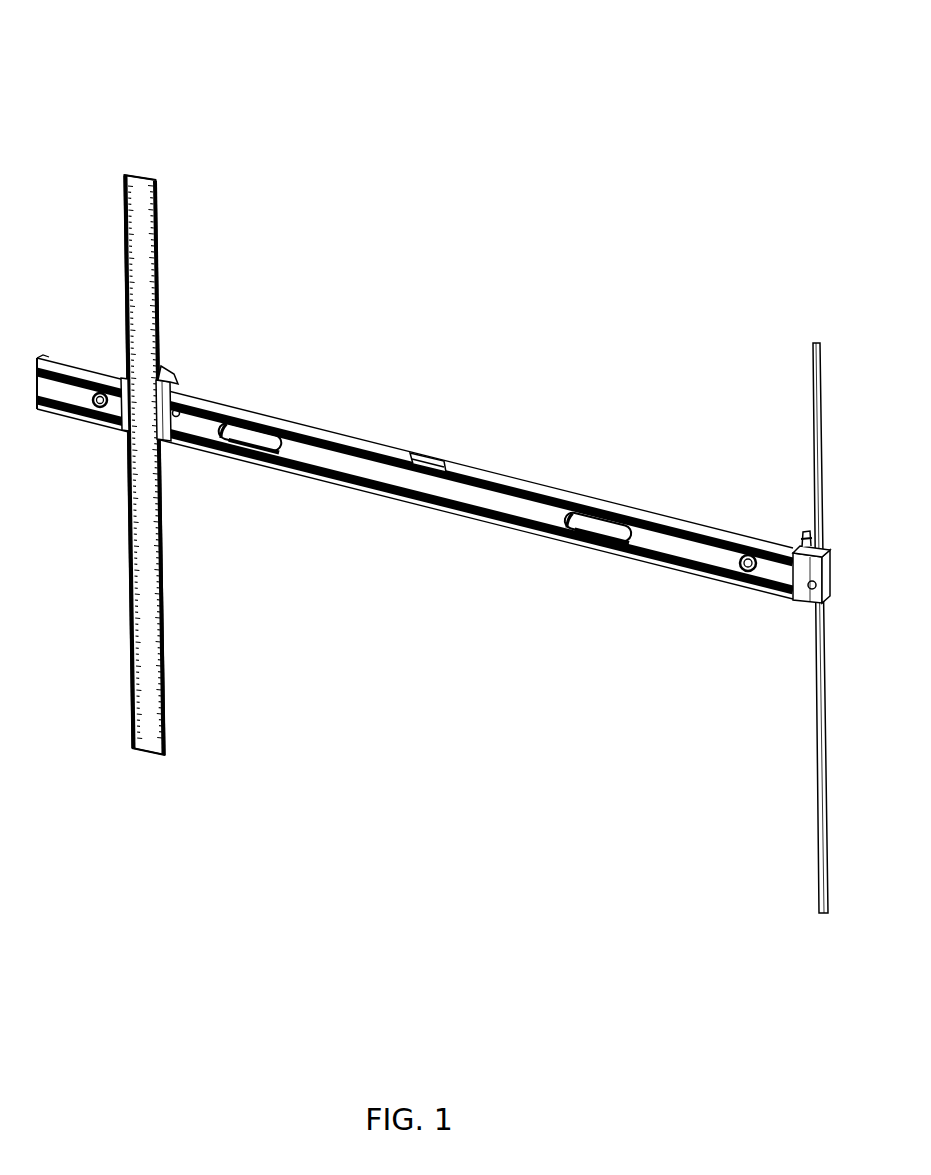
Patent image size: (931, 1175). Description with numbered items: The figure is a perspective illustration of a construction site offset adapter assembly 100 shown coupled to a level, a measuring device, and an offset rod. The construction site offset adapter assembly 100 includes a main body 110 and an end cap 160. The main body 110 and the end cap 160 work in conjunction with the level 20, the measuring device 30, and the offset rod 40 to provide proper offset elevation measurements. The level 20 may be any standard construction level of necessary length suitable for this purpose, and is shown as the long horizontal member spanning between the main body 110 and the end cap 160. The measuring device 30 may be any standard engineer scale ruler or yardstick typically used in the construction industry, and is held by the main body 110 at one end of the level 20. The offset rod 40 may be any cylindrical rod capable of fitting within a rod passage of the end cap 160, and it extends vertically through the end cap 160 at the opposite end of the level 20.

The construction site offset adapter assembly 100 is at (628, 111).
The main body 110 is at (196, 355).
The end cap 160 is at (772, 490).
The level 20 is at (520, 502).
The measuring device 30 is at (150, 628).
The offset rod 40 is at (820, 762).